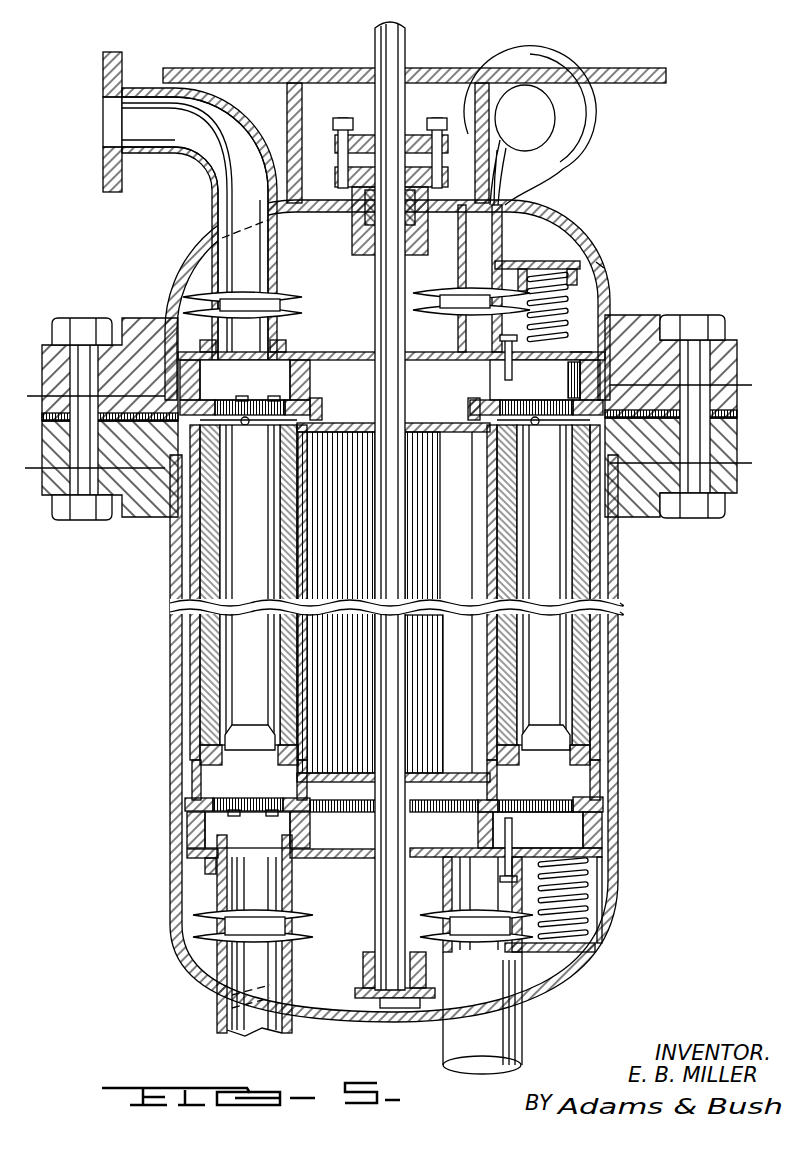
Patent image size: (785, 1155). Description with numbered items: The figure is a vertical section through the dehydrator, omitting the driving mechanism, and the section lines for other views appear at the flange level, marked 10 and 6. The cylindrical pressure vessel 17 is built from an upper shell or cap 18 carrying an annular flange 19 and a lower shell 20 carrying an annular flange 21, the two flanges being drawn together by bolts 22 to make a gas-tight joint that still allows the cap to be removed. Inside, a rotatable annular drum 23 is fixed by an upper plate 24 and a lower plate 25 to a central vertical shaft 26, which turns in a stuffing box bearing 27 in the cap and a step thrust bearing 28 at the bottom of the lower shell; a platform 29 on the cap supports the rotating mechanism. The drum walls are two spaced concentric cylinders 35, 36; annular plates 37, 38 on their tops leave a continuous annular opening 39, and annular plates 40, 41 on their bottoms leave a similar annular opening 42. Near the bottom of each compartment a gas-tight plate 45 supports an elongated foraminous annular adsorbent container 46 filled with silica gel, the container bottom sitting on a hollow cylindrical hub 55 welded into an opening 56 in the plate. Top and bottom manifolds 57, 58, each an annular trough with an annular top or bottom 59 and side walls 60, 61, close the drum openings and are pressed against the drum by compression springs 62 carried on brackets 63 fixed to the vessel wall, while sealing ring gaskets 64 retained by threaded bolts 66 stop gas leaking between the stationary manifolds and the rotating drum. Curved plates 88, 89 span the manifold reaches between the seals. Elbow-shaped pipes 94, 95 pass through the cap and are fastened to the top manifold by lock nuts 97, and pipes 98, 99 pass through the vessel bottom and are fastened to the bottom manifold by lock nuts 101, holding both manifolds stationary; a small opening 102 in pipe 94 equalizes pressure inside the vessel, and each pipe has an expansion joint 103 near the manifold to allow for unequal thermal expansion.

The section line 6- 6 is at (29, 460).
The section line 10- 10 is at (27, 383).
The cylindrical pressure vessel 17 is at (159, 695).
The upper shell or cap 18 is at (602, 270).
The annular flange 19 is at (737, 350).
The lower shell 20 is at (618, 682).
The annular flange 21 is at (737, 483).
The bolts 22 is at (690, 315).
The rotatable annular drum 23 is at (188, 571).
The upper plate 24 is at (367, 433).
The lower plate 25 is at (464, 774).
The central vertical shaft 26 is at (405, 670).
The stuffing box bearing 27 is at (352, 240).
The step thrust bearing 28 is at (364, 990).
The platform 29 is at (628, 68).
The outer concentric cylinder 35 is at (190, 545).
The inner concentric cylinder 36 is at (496, 520).
The annular plate 37 is at (560, 395).
The annular plate 38 is at (335, 410).
The annular opening 39 is at (262, 398).
The annular plate 40 is at (202, 802).
The annular plate 41 is at (393, 606).
The annular opening 42 is at (254, 798).
The plate 45 is at (192, 768).
The foraminous annular adsorbent container 46 is at (280, 700).
The hollow cylindrical hub 55 is at (234, 736).
The opening 56 is at (395, 759).
The top manifold 57 is at (310, 352).
The bottom manifold 58 is at (314, 861).
The annular top (or bottom) 59 is at (590, 327).
The annular side wall 60 is at (504, 338).
The annular side wall 61 is at (587, 375).
The compression springs 62 is at (572, 291).
The brackets 63 is at (582, 262).
The sealing ring gaskets 64 is at (310, 366).
The threaded bolts 66 is at (310, 822).
The curved plate 88 is at (247, 605).
The curved plate 89 is at (281, 605).
The elbow-shaped pipe 94 is at (206, 176).
The elbow-shaped pipe 95 is at (512, 203).
The lock nuts 97 is at (207, 350).
The pipe 98 is at (217, 998).
The pipe 99 is at (521, 1018).
The lock nuts 101 is at (207, 870).
The small opening 102 is at (278, 236).
The expansion joints 103 is at (296, 296).